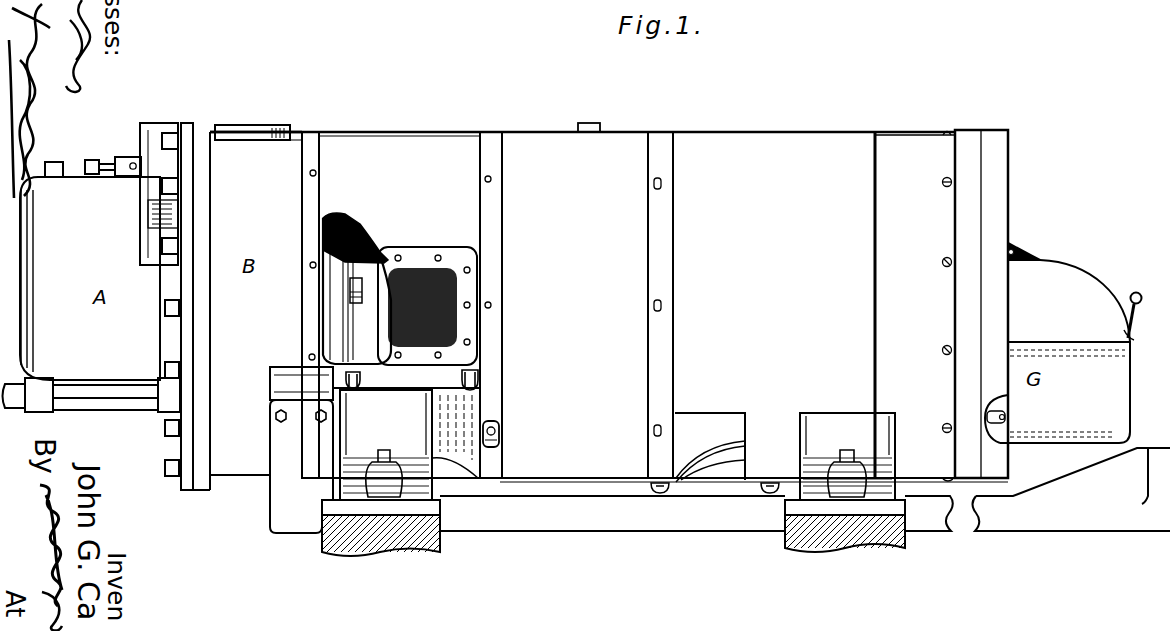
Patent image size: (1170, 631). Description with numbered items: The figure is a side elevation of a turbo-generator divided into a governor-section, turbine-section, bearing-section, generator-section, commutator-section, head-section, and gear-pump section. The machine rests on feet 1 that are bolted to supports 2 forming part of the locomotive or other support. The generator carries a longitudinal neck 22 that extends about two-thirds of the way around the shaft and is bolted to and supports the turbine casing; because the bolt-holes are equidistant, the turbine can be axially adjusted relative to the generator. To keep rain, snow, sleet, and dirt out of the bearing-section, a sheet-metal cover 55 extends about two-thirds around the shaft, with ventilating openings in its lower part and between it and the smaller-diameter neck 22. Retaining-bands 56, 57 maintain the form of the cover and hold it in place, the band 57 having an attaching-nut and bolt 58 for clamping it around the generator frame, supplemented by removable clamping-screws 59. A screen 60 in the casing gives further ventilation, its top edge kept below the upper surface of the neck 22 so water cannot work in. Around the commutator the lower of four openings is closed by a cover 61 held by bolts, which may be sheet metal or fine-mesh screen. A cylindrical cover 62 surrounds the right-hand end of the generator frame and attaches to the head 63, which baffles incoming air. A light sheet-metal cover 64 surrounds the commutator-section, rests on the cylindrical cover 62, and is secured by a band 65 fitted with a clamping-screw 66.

The feet 1 is at (617, 445).
The supports 2 is at (446, 545).
The longitudinal neck 22 is at (357, 288).
The sheet-metal cover 55 is at (442, 143).
The retaining-band 56 is at (308, 196).
The retaining-band 57 is at (494, 337).
The attaching-nut and bolt 58 is at (500, 437).
The removable clamping-screws 59 is at (362, 382).
The screen 60 is at (456, 291).
The cover 61 is at (722, 471).
The cylindrical cover 62 is at (907, 143).
The head 63 is at (973, 129).
The sheet-metal cover 64 is at (716, 138).
The band 65 is at (667, 359).
The clamping-screw 66 is at (660, 494).